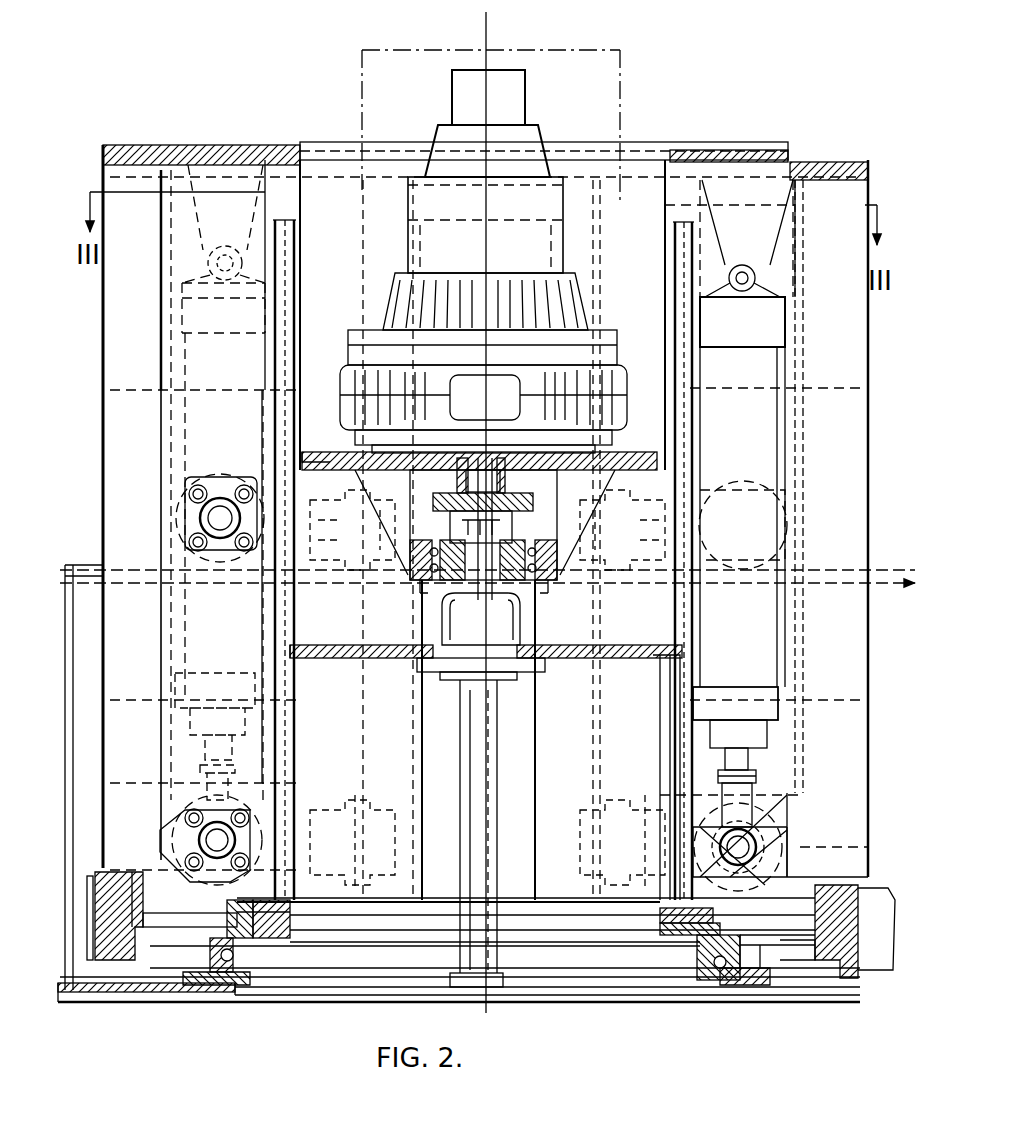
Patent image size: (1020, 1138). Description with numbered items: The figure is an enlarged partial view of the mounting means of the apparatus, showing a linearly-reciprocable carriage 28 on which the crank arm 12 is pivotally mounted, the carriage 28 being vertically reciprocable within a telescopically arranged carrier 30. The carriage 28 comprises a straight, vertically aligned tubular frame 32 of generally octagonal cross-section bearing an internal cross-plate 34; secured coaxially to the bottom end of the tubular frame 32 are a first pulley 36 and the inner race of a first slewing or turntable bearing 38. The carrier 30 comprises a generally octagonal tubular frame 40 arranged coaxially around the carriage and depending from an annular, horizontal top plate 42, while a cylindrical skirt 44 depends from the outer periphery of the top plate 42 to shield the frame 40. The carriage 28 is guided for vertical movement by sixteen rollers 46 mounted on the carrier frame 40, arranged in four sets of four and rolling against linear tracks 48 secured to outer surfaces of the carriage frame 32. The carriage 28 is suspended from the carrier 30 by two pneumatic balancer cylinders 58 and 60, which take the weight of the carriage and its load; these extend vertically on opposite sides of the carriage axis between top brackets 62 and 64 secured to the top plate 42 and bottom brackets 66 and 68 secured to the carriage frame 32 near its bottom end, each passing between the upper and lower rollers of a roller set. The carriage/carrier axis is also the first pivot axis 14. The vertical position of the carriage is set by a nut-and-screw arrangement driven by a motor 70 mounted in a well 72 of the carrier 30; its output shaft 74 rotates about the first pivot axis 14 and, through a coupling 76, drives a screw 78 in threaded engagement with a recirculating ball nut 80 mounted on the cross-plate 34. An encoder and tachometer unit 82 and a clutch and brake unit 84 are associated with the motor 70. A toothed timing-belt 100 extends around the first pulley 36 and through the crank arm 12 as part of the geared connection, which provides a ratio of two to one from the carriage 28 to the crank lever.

The crank arm 12 is at (160, 992).
The first pivot axis 14 is at (486, 27).
The carriage 28 is at (596, 965).
The carrier 30 is at (805, 548).
The tubular frame 32 is at (675, 718).
The cross-plate 34 is at (340, 658).
The first pulley 36 is at (835, 940).
The first slewing or turntable bearing 38 is at (700, 975).
The tubular frame 40 is at (800, 460).
The top plate 42 is at (825, 162).
The cylindrical skirt 44 is at (860, 283).
The rollers 46 is at (183, 502).
The linear tracks 48 is at (278, 258).
The pneumatic balancer cylinder 58 is at (740, 383).
The pneumatic balancer cylinder 60 is at (168, 640).
The top bracket 62 is at (748, 226).
The top bracket 64 is at (208, 217).
The bottom bracket 66 is at (722, 868).
The bottom bracket 68 is at (235, 893).
The motor 70 is at (572, 357).
The well 72 is at (660, 192).
The output shaft 74 is at (502, 476).
The coupling 76 is at (479, 526).
The screw 78 is at (475, 740).
The recirculating ball nut 80 is at (463, 617).
The encoder and tachometer unit 82 is at (505, 97).
The clutch and brake unit 84 is at (510, 162).
The toothed timing-belt 100 is at (875, 960).